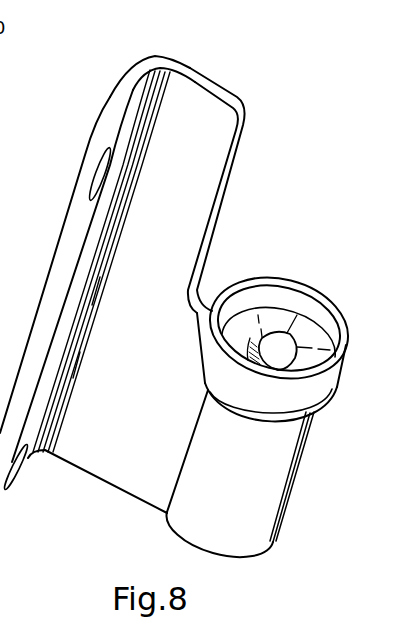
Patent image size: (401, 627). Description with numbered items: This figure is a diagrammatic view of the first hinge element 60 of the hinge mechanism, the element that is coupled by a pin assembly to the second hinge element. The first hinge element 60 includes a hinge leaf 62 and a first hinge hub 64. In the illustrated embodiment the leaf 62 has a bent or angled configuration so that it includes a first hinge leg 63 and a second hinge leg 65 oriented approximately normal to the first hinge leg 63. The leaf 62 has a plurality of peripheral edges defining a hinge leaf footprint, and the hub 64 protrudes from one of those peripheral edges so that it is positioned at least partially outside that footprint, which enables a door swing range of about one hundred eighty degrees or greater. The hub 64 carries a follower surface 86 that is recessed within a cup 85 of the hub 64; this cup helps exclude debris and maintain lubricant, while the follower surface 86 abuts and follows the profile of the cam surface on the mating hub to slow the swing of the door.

The first hinge element 60 is at (275, 102).
The hinge leaf 62 is at (150, 52).
The first hinge leg 63 is at (108, 122).
The first hinge hub 64 is at (268, 443).
The second hinge leg 65 is at (199, 78).
The cup 85 is at (323, 300).
The follower surface 86 is at (264, 326).